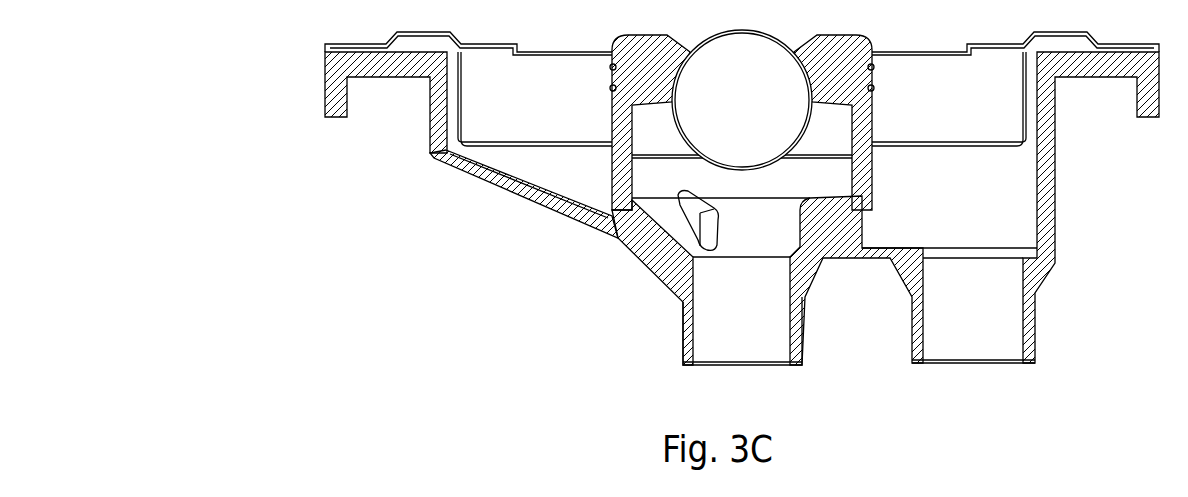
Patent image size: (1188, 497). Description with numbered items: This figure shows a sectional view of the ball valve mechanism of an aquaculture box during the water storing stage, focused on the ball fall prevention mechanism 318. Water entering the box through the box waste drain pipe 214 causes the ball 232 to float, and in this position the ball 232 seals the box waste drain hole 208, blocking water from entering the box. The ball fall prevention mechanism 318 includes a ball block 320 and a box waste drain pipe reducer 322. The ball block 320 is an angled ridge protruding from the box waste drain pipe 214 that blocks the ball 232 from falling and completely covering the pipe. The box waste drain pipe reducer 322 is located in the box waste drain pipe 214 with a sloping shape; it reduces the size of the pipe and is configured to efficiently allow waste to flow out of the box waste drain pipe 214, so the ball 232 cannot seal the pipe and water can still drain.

The box waste drain hole 208 is at (697, 37).
The ball 232 is at (718, 102).
The ball fall prevention mechanism 318 is at (502, 292).
The ball block 320 is at (501, 256).
The box waste drain pipe reducer 322 is at (662, 253).
The box waste drain pipe 214 is at (740, 307).